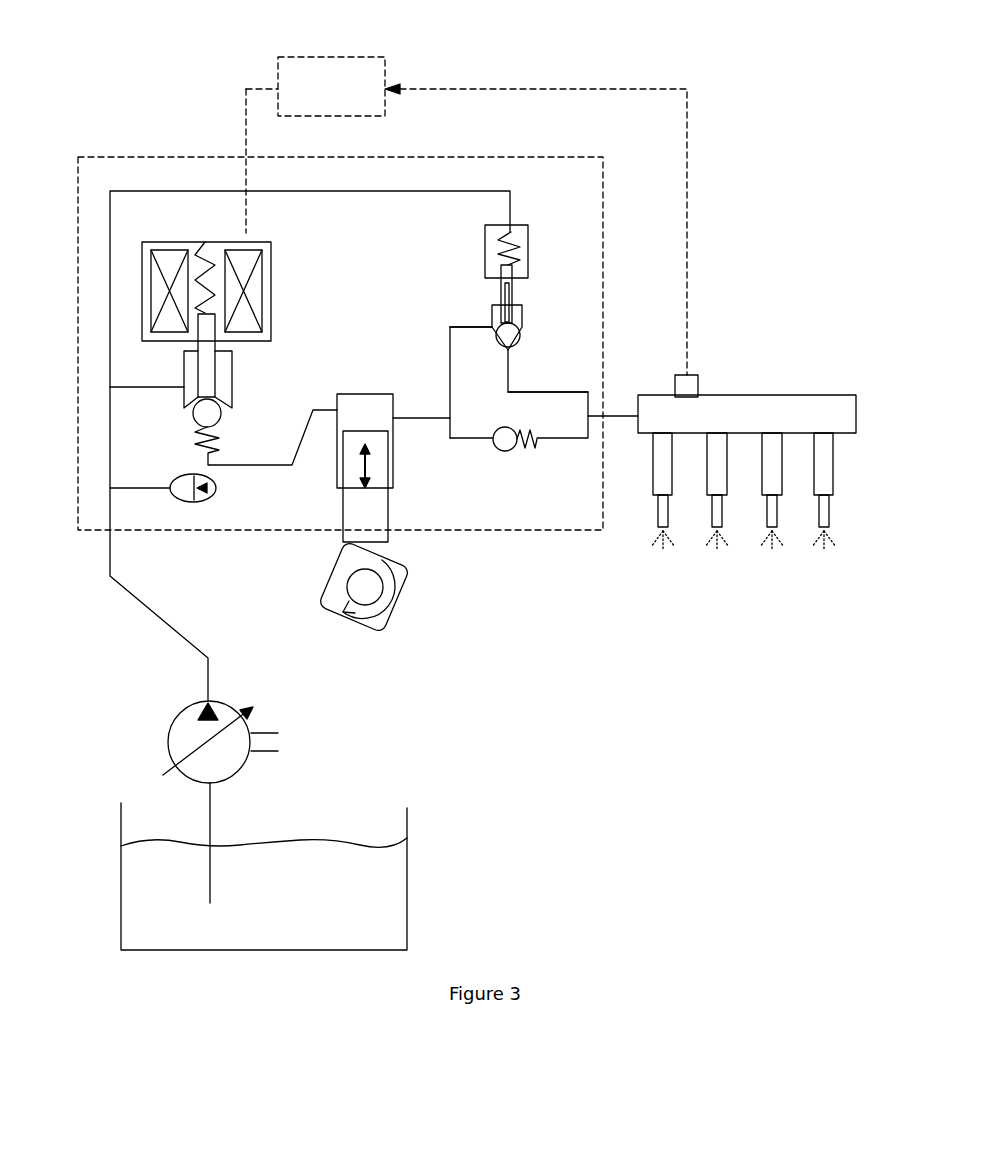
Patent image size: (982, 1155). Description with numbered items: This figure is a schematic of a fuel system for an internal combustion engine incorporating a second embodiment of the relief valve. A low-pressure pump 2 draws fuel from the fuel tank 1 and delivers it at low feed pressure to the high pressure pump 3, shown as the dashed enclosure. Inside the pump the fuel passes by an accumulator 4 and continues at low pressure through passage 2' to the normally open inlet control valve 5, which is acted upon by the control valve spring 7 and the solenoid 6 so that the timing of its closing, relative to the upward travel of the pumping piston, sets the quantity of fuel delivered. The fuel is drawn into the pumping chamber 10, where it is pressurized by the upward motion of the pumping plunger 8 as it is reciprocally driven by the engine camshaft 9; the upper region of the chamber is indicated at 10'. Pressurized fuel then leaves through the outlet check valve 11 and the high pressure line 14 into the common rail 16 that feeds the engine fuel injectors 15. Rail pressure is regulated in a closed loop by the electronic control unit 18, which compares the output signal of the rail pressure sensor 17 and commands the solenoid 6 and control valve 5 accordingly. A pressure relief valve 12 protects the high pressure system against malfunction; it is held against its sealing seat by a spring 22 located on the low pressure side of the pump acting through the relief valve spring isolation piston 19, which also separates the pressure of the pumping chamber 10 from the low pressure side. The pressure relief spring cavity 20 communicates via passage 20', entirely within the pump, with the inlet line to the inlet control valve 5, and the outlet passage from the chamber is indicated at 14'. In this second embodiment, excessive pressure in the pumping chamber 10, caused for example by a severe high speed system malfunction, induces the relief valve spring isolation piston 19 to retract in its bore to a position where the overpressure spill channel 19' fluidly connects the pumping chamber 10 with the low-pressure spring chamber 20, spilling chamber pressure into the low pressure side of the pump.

The fuel tank 1 is at (407, 875).
The low-pressure pump 2 is at (197, 781).
The passage 2' is at (121, 543).
The high pressure pump 3 is at (182, 157).
The accumulator 4 is at (183, 502).
The inlet control valve 5 is at (235, 395).
The solenoid 6 is at (164, 328).
The control valve spring 7 is at (205, 250).
The pumping plunger 8 is at (388, 500).
The engine camshaft 9 is at (408, 587).
The pumping chamber 10 is at (453, 371).
The valve body upper portion 10' is at (442, 314).
The outlet check valve 11 is at (505, 440).
The pressure relief valve 12 is at (513, 337).
The high pressure line 14 is at (614, 364).
The outlet passage 14' is at (551, 363).
The engine fuel injectors 15 is at (830, 467).
The common rail 16 is at (788, 393).
The rail pressure sensor 17 is at (700, 378).
The electronic control unit 18 is at (382, 55).
The relief valve spring isolation piston 19 is at (464, 294).
The overpressure spill channel 19' is at (543, 293).
The low-pressure spring chamber 20 is at (534, 228).
The passage 20' is at (268, 289).
The relief spring 22 is at (483, 250).